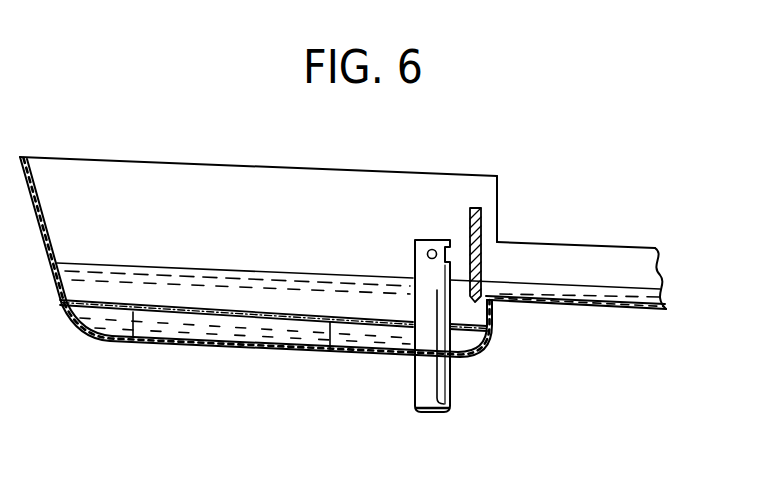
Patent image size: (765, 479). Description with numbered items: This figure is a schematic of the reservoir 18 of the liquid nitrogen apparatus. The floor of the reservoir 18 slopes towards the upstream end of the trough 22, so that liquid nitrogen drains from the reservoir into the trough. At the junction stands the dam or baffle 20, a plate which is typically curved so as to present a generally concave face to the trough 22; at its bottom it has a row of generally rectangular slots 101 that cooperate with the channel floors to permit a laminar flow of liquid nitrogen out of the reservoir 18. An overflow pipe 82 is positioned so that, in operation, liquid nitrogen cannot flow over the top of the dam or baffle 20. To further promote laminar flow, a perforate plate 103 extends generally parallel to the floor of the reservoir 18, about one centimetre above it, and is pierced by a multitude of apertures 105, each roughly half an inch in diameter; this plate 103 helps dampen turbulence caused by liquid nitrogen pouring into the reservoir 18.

The reservoir 18 is at (103, 163).
The overflow pipe 82 is at (414, 268).
The dam or baffle 20 is at (482, 229).
The trough 22 is at (596, 262).
The slots 101 is at (492, 318).
The perforate plate 103 is at (228, 318).
The apertures 105 is at (133, 312).